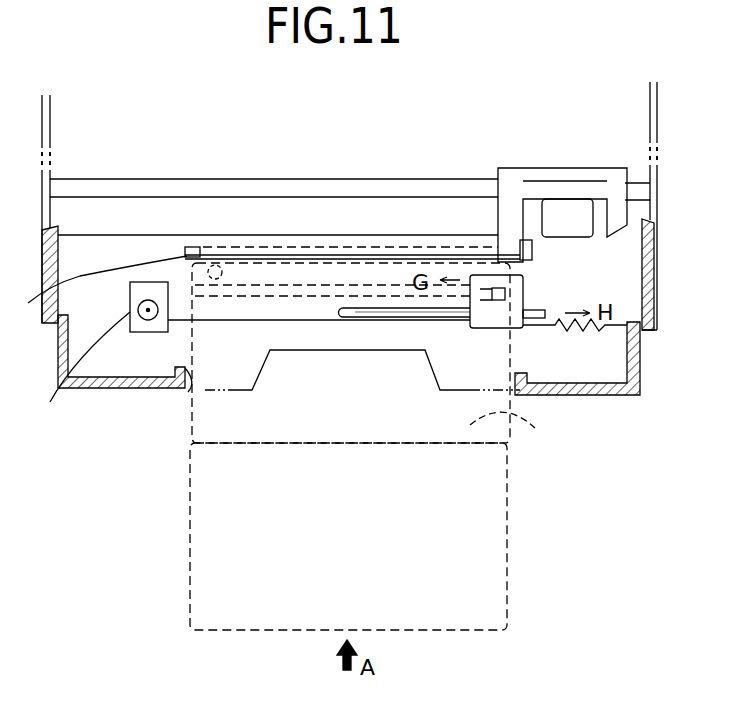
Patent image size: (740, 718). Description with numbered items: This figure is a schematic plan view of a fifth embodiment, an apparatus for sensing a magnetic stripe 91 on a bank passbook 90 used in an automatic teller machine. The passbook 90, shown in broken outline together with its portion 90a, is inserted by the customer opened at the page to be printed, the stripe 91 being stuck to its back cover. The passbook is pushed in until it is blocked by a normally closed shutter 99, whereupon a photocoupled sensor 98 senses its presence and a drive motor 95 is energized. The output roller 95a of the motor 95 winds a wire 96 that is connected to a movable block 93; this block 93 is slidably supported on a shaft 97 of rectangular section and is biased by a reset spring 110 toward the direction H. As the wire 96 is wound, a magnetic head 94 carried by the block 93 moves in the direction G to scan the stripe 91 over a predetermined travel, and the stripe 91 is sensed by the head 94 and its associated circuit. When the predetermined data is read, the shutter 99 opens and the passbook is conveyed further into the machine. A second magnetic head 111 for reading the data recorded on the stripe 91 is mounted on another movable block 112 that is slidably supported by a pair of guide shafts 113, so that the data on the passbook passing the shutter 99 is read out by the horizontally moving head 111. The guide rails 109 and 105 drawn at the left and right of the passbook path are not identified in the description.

The bank passbook 90 is at (508, 505).
The cassette front portion 90a is at (530, 428).
The magnetic stripe 91 is at (276, 290).
The movable block 93 is at (475, 328).
The magnetic head 94 is at (505, 293).
The drive motor 95 is at (133, 331).
The output roller 95a is at (79, 368).
The wire 96 is at (303, 322).
The shaft 97 is at (355, 312).
The photocoupled sensor 98 is at (200, 240).
The shutter 99 is at (96, 294).
The right guide rail 105 is at (617, 394).
The left guide rail 109 is at (191, 395).
The reset spring 110 is at (603, 328).
The magnetic head 111 is at (562, 208).
The movable block 112 is at (507, 180).
The guide shafts 113 is at (140, 243).